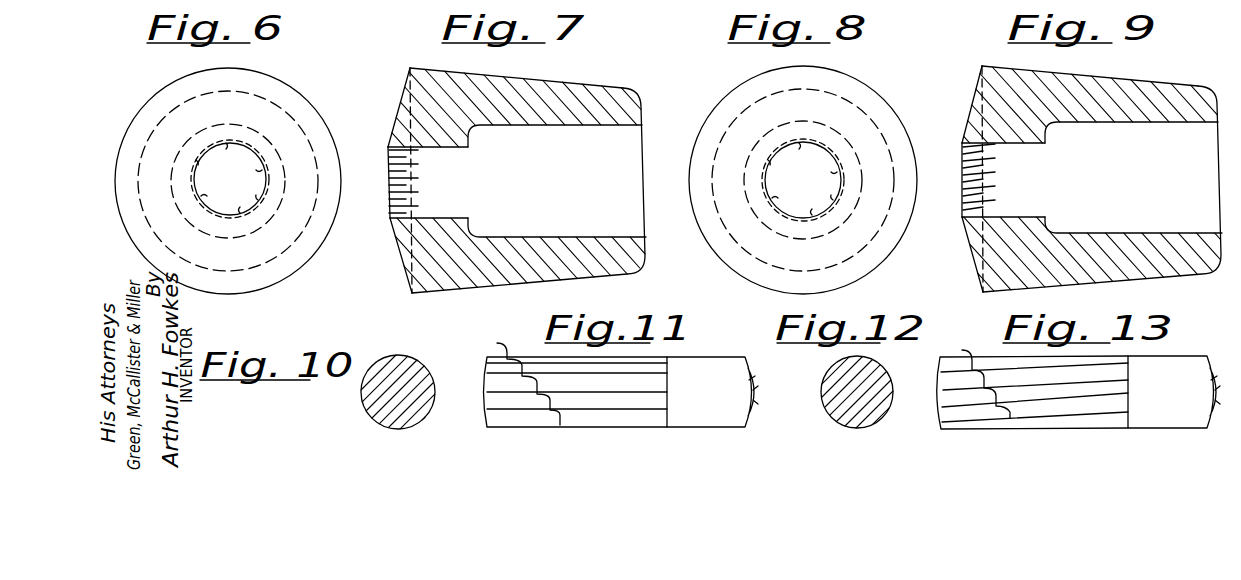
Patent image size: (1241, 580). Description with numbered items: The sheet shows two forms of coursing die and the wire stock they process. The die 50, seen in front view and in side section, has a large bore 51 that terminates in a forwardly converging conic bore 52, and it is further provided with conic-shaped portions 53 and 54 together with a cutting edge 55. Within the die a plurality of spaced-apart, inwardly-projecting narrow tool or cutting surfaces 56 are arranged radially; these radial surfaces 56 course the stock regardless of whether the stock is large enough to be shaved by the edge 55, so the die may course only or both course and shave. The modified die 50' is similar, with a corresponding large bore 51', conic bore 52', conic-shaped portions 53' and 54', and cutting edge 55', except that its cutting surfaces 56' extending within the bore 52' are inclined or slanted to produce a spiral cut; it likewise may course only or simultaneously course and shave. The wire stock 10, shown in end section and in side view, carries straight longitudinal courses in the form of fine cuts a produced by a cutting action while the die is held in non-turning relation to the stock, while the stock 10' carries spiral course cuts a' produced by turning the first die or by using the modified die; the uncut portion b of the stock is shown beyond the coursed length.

In FIG. 6, the coursing die 50 is at (239, 181).
In FIG. 7, the coursing die 50 is at (518, 180).
In FIG. 6, the large bore 51 is at (131, 233).
In FIG. 7, the large bore 51 is at (557, 181).
In FIG. 6, the conic bore 52 is at (187, 135).
In FIG. 7, the conic bore 52 is at (453, 178).
In FIG. 6, the conic-shaped portion 53 is at (253, 181).
In FIG. 7, the conic-shaped portion 53 is at (516, 72).
In FIG. 6, the conic-shaped portion 54 is at (179, 171).
In FIG. 7, the conic-shaped portion 54 is at (380, 174).
In FIG. 6, the cutting edge 55 is at (230, 179).
In FIG. 7, the cutting edge 55 is at (367, 161).
In FIG. 6, the cutting surfaces 56 is at (229, 178).
In FIG. 7, the cutting surfaces 56 is at (424, 181).
In FIG. 8, the coursing die 50' is at (813, 180).
In FIG. 9, the coursing die 50' is at (1092, 179).
In FIG. 8, the large bore 51' is at (851, 86).
In FIG. 9, the large bore 51' is at (1133, 177).
In FIG. 8, the conic bore 52' is at (763, 136).
In FIG. 9, the conic bore 52' is at (1030, 176).
In FIG. 8, the conic-shaped portion 53' is at (831, 180).
In FIG. 9, the conic-shaped portion 53' is at (1090, 70).
In FIG. 8, the conic-shaped portion 54' is at (761, 172).
In FIG. 9, the conic-shaped portion 54' is at (950, 179).
In FIG. 8, the cutting edge 55' is at (797, 196).
In FIG. 9, the cutting edge 55' is at (938, 162).
In FIG. 8, the cutting surfaces 56' is at (802, 179).
In FIG. 9, the cutting surfaces 56' is at (1000, 177).
In FIG. 10, the wire stock 10 is at (410, 409).
In FIG. 11, the wire stock 10 is at (605, 392).
In FIG. 12, the wire stock 10' is at (869, 410).
In FIG. 13, the wire stock 10' is at (1062, 392).
In FIG. 10, the fine cuts a is at (398, 341).
In FIG. 11, the fine cuts a is at (568, 375).
In FIG. 12, the fine cuts a is at (813, 434).
In FIG. 13, the fine cuts a' is at (1034, 371).
In FIG. 11, the plain portion of rod b is at (710, 417).
In FIG. 13, the plain portion of rod b is at (1170, 420).